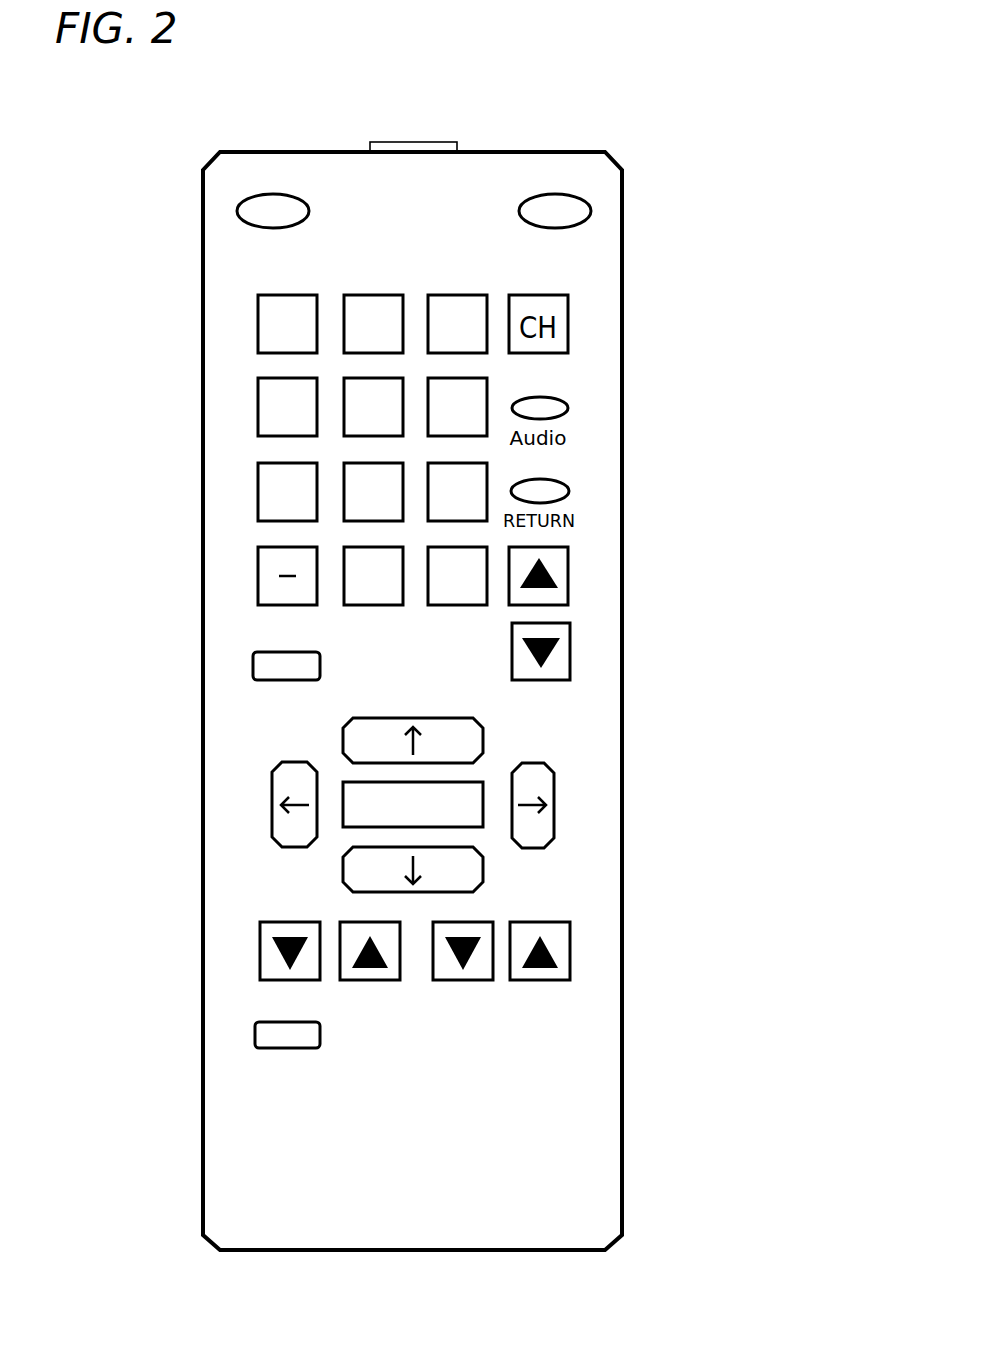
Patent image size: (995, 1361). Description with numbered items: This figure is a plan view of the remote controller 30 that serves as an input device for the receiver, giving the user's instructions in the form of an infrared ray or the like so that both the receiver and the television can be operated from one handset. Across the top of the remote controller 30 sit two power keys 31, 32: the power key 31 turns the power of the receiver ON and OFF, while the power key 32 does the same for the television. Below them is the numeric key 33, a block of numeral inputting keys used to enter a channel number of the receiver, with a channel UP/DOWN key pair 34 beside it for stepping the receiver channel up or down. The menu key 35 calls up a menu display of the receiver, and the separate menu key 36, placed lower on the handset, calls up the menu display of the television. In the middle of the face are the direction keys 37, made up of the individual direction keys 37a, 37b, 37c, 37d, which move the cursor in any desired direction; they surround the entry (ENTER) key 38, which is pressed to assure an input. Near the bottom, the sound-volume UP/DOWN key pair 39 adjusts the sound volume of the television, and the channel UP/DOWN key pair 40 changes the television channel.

The remote controller 30 is at (464, 69).
The power key 31 is at (553, 194).
The power key 32 is at (280, 194).
The numeric key 33 is at (253, 280).
The channel UP/DOWN key pair 34 is at (575, 536).
The menu key 35 is at (253, 668).
The menu key 36 is at (255, 1035).
The direction keys 37 is at (460, 798).
The direction key 37a is at (484, 738).
The direction key 37b is at (484, 865).
The direction key 37c is at (272, 805).
The direction key 37d is at (555, 788).
The entry (ENTER) key 38 is at (353, 827).
The sound-volume UP/DOWN key pair 39 is at (260, 1000).
The channel UP/DOWN key pair 40 is at (572, 1000).